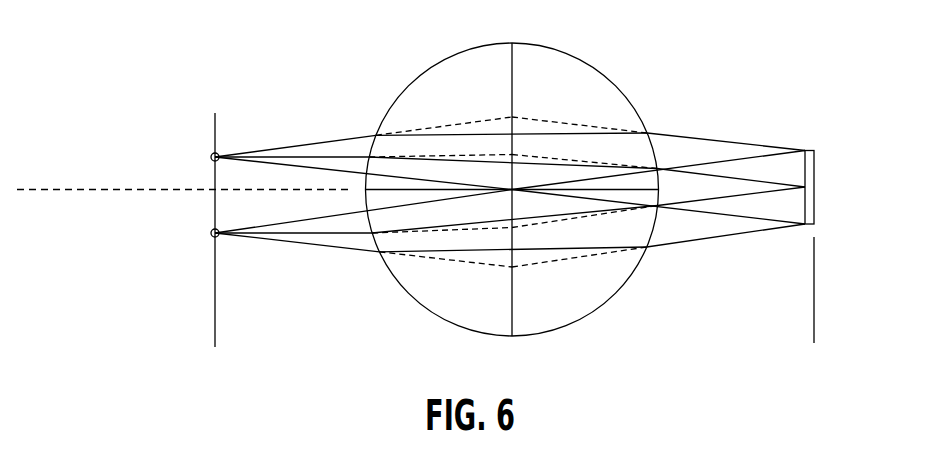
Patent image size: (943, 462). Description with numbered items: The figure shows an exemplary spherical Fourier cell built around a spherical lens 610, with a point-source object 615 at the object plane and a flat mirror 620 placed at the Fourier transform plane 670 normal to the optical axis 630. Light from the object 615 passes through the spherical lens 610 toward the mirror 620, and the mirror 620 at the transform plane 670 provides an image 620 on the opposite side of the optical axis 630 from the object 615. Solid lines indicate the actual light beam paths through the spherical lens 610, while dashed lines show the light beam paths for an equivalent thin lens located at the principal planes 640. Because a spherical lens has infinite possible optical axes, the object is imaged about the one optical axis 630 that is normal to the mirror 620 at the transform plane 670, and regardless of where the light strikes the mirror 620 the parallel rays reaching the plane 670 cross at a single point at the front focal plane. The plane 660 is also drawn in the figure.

The spherical lens 610 is at (562, 329).
The object 615 is at (212, 234).
The mirror 620 is at (218, 156).
The optical axis 630 is at (93, 189).
The principal planes 640 is at (512, 311).
The object plane 660 is at (214, 338).
The Fourier transform plane 670 is at (813, 327).